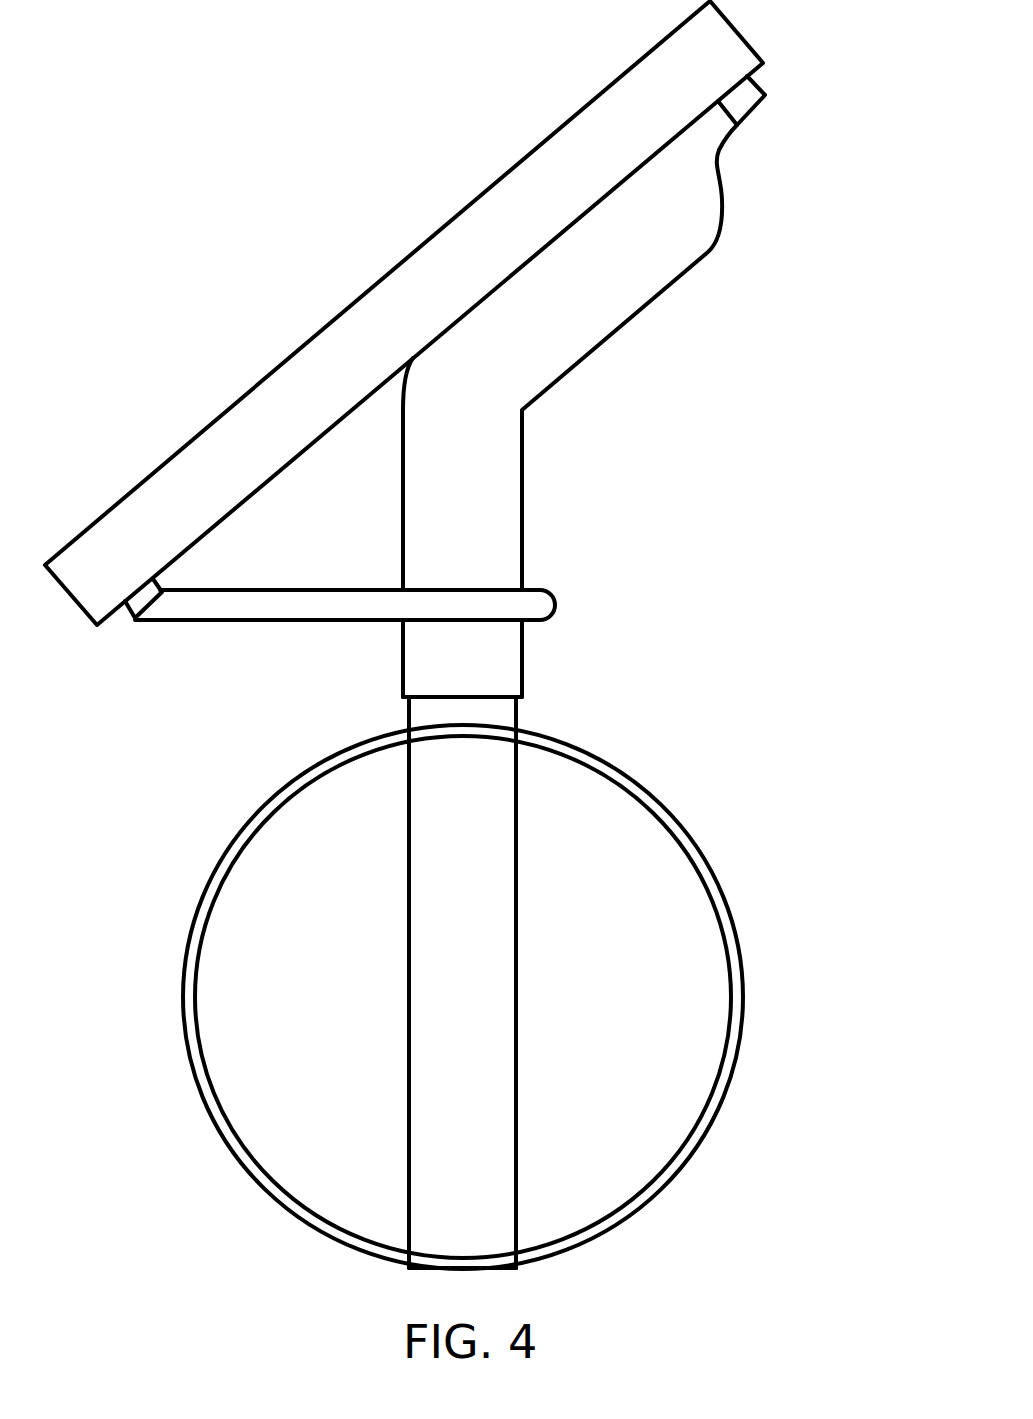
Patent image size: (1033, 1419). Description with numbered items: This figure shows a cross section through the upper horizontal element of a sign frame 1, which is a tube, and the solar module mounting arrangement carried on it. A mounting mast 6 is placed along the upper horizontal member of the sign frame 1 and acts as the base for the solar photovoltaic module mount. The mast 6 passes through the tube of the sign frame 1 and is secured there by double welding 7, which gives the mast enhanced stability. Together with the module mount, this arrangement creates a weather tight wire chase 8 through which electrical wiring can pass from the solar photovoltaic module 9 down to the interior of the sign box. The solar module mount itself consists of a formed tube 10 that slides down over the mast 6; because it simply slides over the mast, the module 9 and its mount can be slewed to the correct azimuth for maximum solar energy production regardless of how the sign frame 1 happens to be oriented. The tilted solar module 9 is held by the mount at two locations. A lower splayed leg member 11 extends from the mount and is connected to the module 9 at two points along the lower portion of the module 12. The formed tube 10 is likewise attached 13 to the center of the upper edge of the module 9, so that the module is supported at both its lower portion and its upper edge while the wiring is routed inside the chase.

The sign frame 1 is at (717, 862).
The mounting mast 6 is at (403, 922).
The double welding 7 is at (532, 725).
The wire chase 8 is at (486, 1296).
The solar photovoltaic module 9 is at (333, 316).
The formed tube 10 is at (625, 335).
The lower splayed leg member 11 is at (313, 646).
The lower portion of the module 12 is at (133, 630).
The attachment of formed tube to module 13 is at (753, 133).